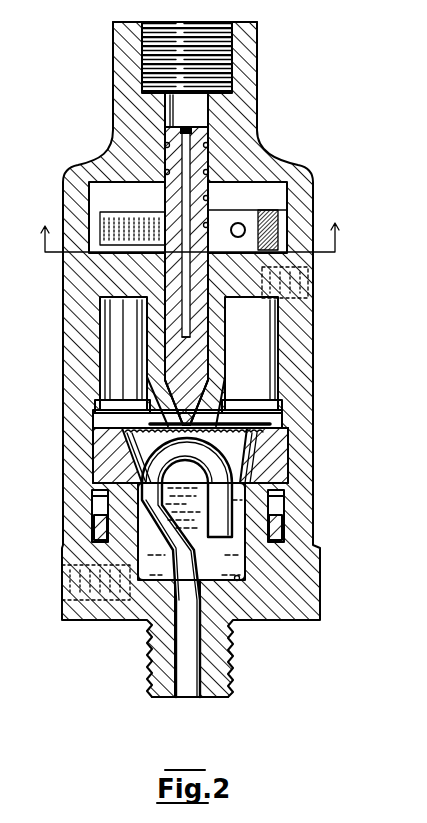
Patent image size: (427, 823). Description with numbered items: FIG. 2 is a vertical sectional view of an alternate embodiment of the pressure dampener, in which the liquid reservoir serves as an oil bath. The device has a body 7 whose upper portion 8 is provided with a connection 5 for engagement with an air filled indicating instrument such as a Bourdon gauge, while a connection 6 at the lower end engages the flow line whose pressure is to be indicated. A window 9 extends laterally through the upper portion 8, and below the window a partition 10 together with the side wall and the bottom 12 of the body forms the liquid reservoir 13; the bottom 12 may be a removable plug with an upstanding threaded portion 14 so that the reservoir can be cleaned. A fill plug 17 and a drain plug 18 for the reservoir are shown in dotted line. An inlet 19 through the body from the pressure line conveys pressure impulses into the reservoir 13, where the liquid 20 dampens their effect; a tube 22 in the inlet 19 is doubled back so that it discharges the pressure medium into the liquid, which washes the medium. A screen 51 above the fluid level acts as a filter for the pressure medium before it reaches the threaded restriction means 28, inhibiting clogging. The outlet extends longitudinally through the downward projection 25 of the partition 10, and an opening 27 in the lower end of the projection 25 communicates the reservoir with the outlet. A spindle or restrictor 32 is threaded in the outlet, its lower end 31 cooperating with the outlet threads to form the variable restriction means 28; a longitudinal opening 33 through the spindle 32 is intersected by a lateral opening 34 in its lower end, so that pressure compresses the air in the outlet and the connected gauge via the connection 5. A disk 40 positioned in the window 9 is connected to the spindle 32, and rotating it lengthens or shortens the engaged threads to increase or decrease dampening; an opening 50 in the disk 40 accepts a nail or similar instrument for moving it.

The connection 5 is at (253, 68).
The connection 6 is at (233, 668).
The body 7 is at (302, 348).
The upper portion 8 is at (307, 162).
The window 9 is at (193, 211).
The partition 10 is at (11, 381).
The bottom 12 is at (266, 636).
The liquid reservoir 13 is at (244, 460).
The upstanding portion 14 is at (280, 533).
The fill plug 17 is at (300, 292).
The drain plug 18 is at (66, 590).
The inlet 19 is at (200, 697).
The liquid 20 is at (147, 557).
The tube 22 is at (233, 521).
The downward projection 25 is at (222, 376).
The opening 27 is at (165, 427).
The restriction means 28 is at (204, 389).
The lower end 31 is at (200, 352).
The spindle 32 is at (203, 156).
The opening 33 is at (184, 131).
The lateral opening 34 is at (178, 336).
The disk 40 is at (274, 210).
The opening 50 is at (247, 228).
The screen 51 is at (280, 412).